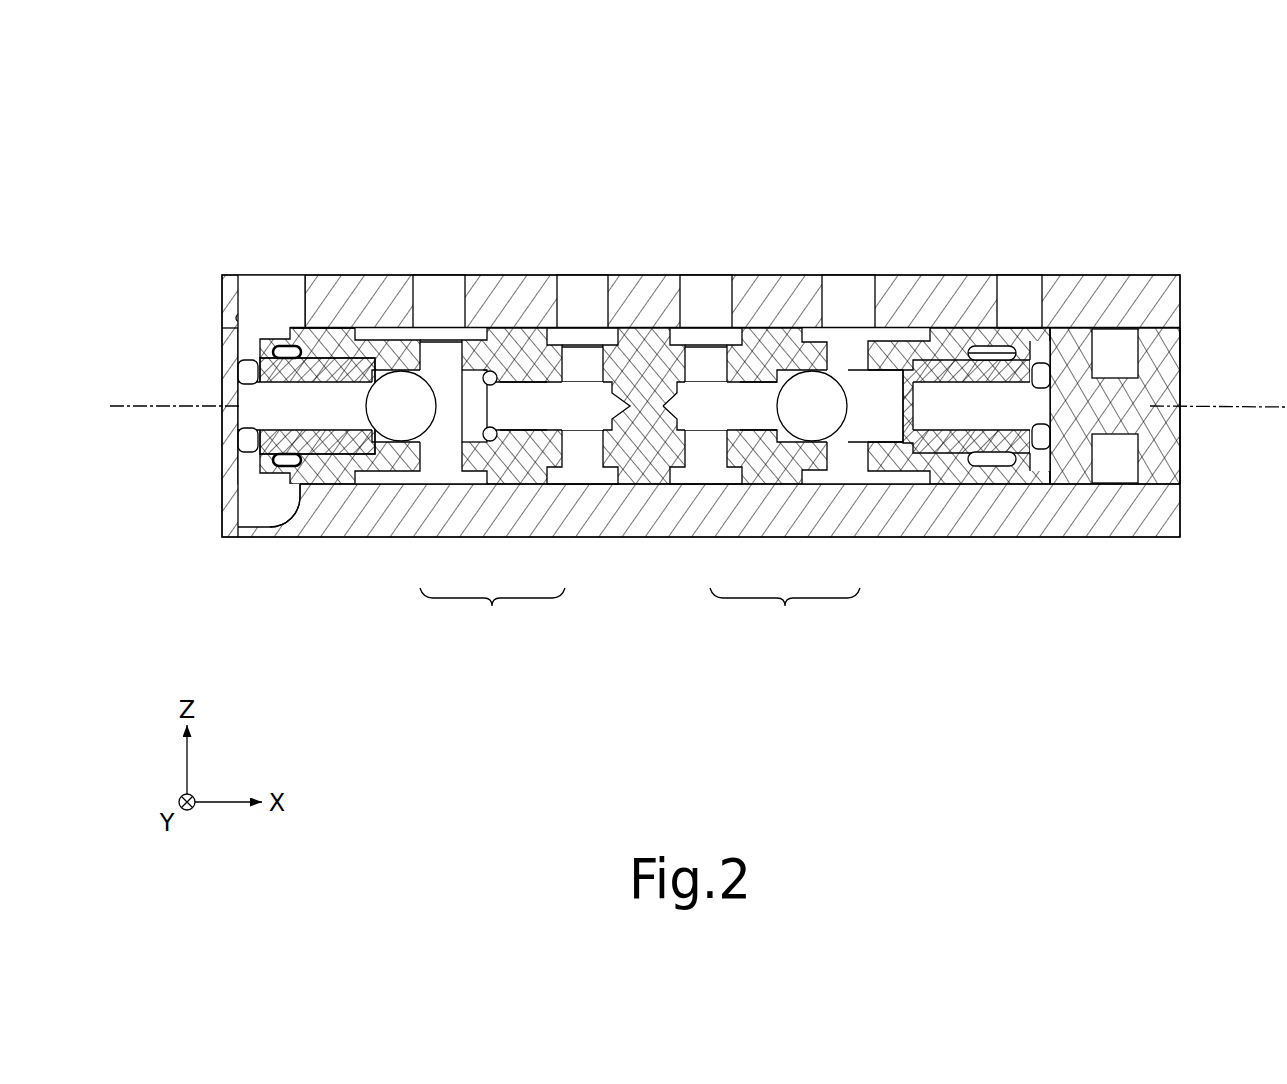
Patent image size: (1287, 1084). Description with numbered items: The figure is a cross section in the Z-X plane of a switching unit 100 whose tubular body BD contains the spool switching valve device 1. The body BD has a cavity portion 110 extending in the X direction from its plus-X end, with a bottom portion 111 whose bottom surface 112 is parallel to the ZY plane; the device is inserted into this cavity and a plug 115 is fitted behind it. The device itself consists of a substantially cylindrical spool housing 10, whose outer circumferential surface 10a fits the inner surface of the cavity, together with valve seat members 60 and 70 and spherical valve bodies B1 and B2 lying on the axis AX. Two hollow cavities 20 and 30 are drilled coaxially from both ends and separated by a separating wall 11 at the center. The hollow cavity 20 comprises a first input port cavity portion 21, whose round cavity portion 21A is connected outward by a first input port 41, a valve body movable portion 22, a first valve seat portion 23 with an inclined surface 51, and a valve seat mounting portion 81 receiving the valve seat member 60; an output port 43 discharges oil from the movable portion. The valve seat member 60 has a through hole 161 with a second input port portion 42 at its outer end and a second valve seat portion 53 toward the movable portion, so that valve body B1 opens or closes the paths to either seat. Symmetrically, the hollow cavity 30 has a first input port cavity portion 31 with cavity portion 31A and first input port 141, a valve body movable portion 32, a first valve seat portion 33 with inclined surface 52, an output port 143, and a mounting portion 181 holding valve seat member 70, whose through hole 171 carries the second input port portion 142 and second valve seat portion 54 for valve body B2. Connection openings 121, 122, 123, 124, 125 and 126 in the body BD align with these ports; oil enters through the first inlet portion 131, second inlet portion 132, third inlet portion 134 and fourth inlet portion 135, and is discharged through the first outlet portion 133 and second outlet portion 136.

The spool switching valve device 1 is at (290, 480).
The spool housing 10 is at (630, 488).
The outer circumferential surface 10a is at (336, 325).
The separating wall 11 is at (648, 445).
The hollow cavity 20 is at (492, 613).
The first input port cavity portion 21 is at (531, 418).
The cavity portion 21A is at (583, 420).
The valve body movable portion 22 is at (463, 425).
The first valve seat portion 23 is at (505, 427).
The hollow cavity 30 is at (785, 613).
The first input port cavity portion 31 is at (750, 420).
The cavity portion 31A is at (732, 420).
The valve body movable portion 32 is at (865, 420).
The first valve seat portion 33 is at (798, 434).
The first input port 41 is at (586, 343).
The second input port portion 42 is at (248, 358).
The output port 43 is at (442, 338).
The inclined surface 51 is at (488, 370).
The inclined surface 52 is at (803, 384).
The second valve seat portion 53 is at (383, 426).
The second valve seat portion 54 is at (897, 386).
The valve seat member 60 is at (258, 360).
The valve seat member 70 is at (1000, 454).
The valve seat mounting portion 81 is at (345, 368).
The switching unit 100 is at (1152, 206).
The cavity portion 110 is at (1183, 345).
The bottom portion 111 is at (222, 331).
The bottom surface 112 is at (236, 316).
The plug 115 is at (1182, 470).
The connection opening 121 is at (598, 300).
The connection opening 122 is at (285, 291).
The connection opening 123 is at (428, 278).
The connection opening 124 is at (698, 300).
The connection opening 125 is at (1032, 292).
The connection opening 126 is at (837, 292).
The first inlet portion 131 is at (584, 270).
The second inlet portion 132 is at (272, 268).
The first outlet portion 133 is at (440, 275).
The third inlet portion 134 is at (706, 270).
The fourth inlet portion 135 is at (1021, 268).
The second outlet portion 136 is at (850, 275).
The first input port 141 is at (712, 343).
The second input port portion 142 is at (1041, 352).
The output port 143 is at (984, 345).
The through hole 161 is at (283, 411).
The through hole 171 is at (1028, 410).
The valve seat mounting portion 181 is at (946, 378).
The valve body B1 is at (400, 420).
The valve body B2 is at (918, 447).
The axis AX is at (1228, 412).
The body BD is at (1187, 272).